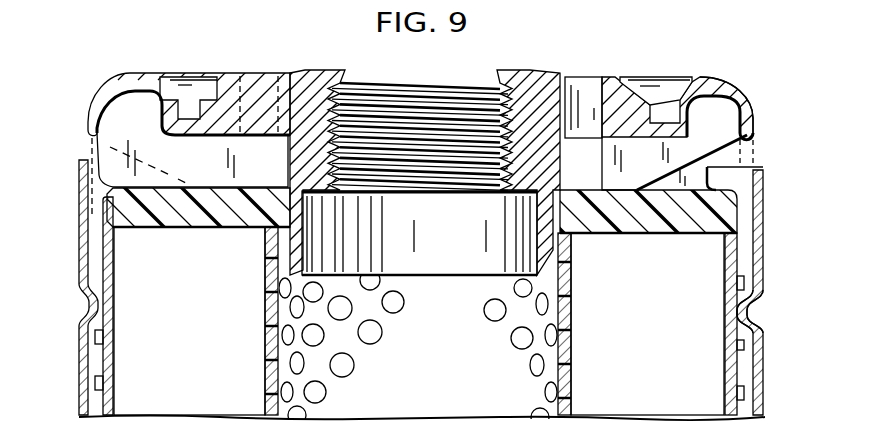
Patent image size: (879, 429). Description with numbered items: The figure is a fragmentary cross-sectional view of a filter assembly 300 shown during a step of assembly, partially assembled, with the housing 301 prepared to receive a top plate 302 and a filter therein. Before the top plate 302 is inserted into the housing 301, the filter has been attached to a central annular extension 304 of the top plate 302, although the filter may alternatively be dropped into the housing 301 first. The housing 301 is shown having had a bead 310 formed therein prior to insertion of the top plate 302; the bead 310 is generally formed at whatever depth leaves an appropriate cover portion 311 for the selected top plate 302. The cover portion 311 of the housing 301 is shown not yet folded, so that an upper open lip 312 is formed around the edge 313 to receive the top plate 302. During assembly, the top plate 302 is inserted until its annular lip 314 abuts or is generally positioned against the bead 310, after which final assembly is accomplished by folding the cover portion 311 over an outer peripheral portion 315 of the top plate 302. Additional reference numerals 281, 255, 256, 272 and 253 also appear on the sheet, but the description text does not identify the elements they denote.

The assembly 300 is at (706, 70).
The housing 301 is at (762, 366).
The top plate 302 is at (300, 61).
The central annular extension 304 is at (452, 278).
The bead 310 is at (753, 317).
The cover portion 311 is at (762, 190).
The upper open lip 312 is at (757, 163).
The edge 313 is at (82, 160).
The annular lip 314 is at (758, 131).
The outer peripheral portion 315 is at (727, 100).
The gasket 281 is at (207, 0).
The thread insert 255 is at (343, 0).
The spacer 256 is at (538, 0).
The washer 272 is at (597, 11).
The retainer 253 is at (652, 0).